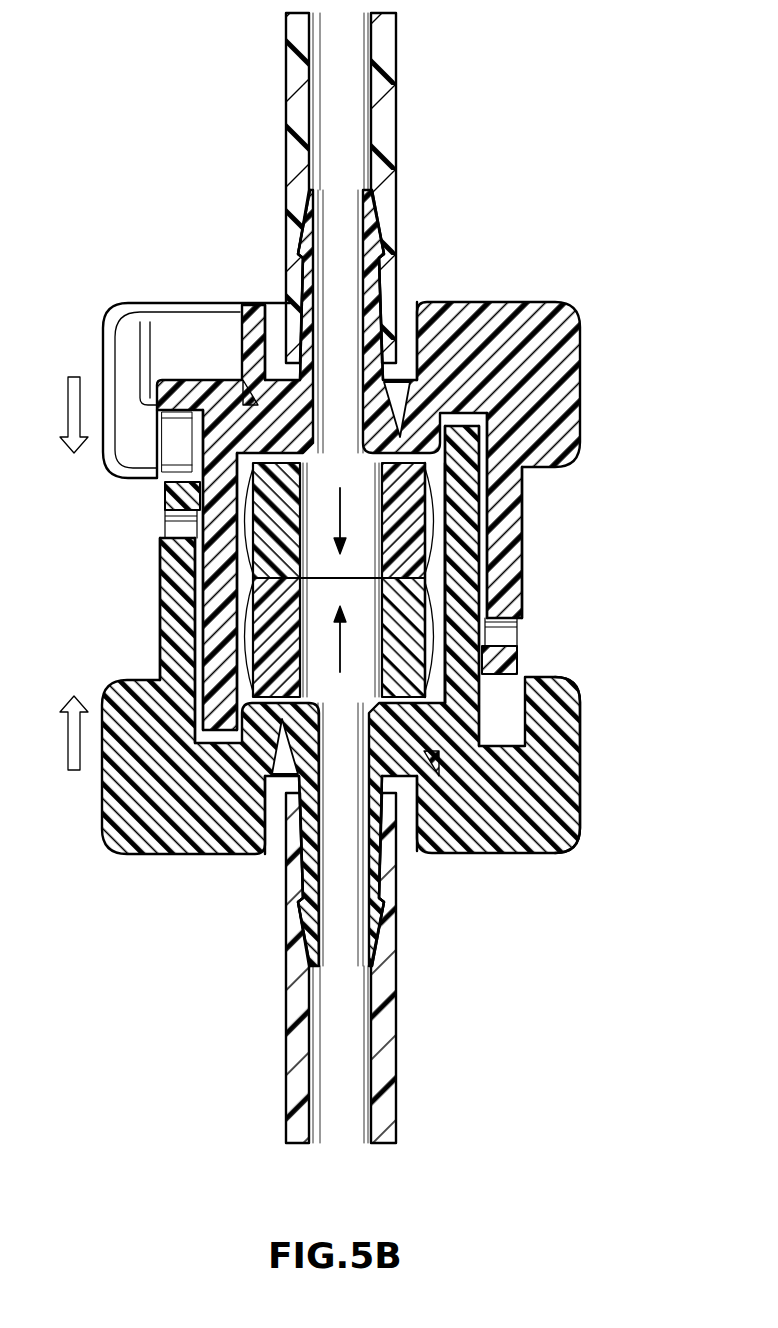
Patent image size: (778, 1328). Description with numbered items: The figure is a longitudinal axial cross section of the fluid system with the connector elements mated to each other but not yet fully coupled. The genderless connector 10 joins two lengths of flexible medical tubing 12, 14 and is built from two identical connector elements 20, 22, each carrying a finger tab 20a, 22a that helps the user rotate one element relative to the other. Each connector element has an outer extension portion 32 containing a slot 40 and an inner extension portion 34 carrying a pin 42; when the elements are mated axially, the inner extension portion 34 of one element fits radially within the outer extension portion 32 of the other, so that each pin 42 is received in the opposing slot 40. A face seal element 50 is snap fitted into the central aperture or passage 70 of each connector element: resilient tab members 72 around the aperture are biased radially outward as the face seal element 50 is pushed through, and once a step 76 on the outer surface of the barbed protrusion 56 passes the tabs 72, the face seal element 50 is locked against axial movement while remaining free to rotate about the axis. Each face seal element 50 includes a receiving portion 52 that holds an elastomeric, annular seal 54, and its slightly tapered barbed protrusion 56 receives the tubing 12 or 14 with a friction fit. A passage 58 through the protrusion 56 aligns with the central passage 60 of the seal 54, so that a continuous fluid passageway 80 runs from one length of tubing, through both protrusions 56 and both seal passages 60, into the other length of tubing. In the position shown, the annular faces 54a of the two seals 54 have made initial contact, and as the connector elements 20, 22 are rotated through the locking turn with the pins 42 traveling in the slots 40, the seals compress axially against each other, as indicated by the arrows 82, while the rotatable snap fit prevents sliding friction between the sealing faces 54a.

The genderless connector 10 is at (166, 299).
The flexible medical tubing 12 is at (396, 88).
The flexible medical tubing 14 is at (396, 1030).
The connector element 20 is at (495, 854).
The finger tab 20a is at (112, 840).
The connector element 22 is at (510, 304).
The finger tab 22a is at (108, 312).
The outer extension portion 32 is at (160, 660).
The inner extension portion 34 is at (208, 637).
The slot 40 is at (172, 520).
The pin 42 is at (168, 502).
The face seal element 50 is at (442, 500).
The receiving portion 52 is at (437, 540).
The elastomeric annular seal 54 is at (259, 578).
The annular face 54a is at (440, 578).
The barbed protrusion 56 is at (375, 224).
The passage 58 is at (335, 230).
The central passage 60 is at (237, 600).
The central aperture or passage 70 is at (283, 305).
The resilient tab member 72 is at (283, 410).
The step 76 is at (425, 308).
The fluid passageway 80 is at (340, 105).
The arrows 82 is at (337, 513).